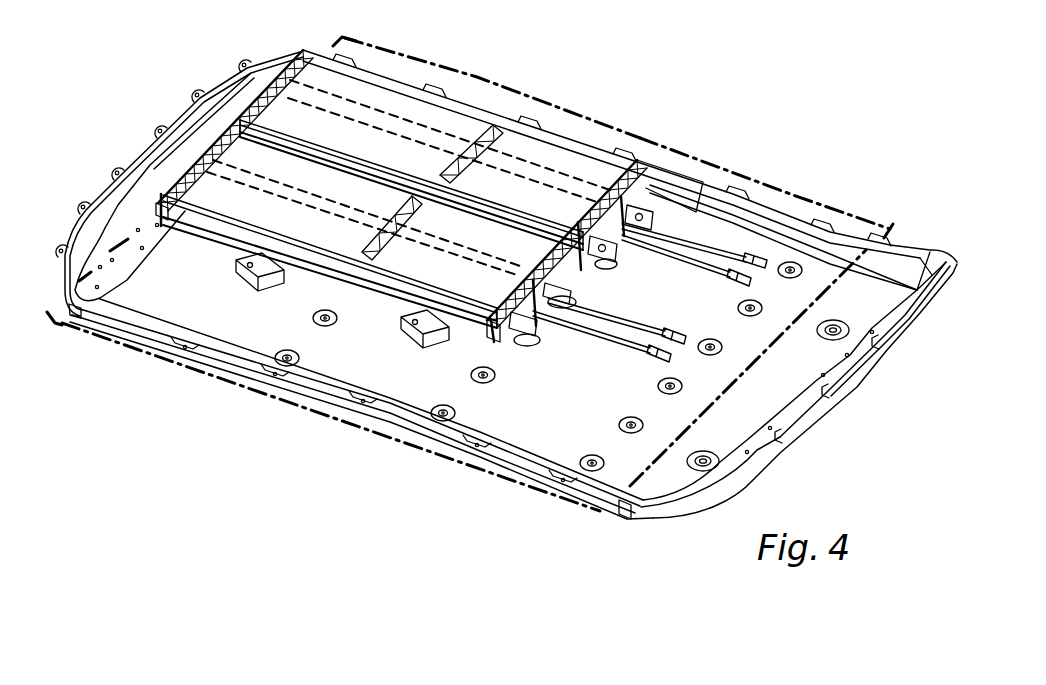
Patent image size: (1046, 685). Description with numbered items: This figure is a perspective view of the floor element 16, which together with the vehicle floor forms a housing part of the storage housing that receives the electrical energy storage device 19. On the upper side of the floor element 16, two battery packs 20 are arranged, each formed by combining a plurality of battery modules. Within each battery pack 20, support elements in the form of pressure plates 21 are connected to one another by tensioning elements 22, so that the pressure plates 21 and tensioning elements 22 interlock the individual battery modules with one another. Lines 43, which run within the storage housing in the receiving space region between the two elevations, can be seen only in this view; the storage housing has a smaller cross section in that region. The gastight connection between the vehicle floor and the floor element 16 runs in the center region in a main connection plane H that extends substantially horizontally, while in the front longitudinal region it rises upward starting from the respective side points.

The floor element 16 is at (802, 186).
The electrical energy storage device 19 is at (479, 66).
The battery pack 20 is at (571, 106).
The pressure plate 21 is at (303, 50).
The tensioning element 22 is at (573, 184).
The line 43 is at (680, 234).
The main connection plane H is at (238, 388).